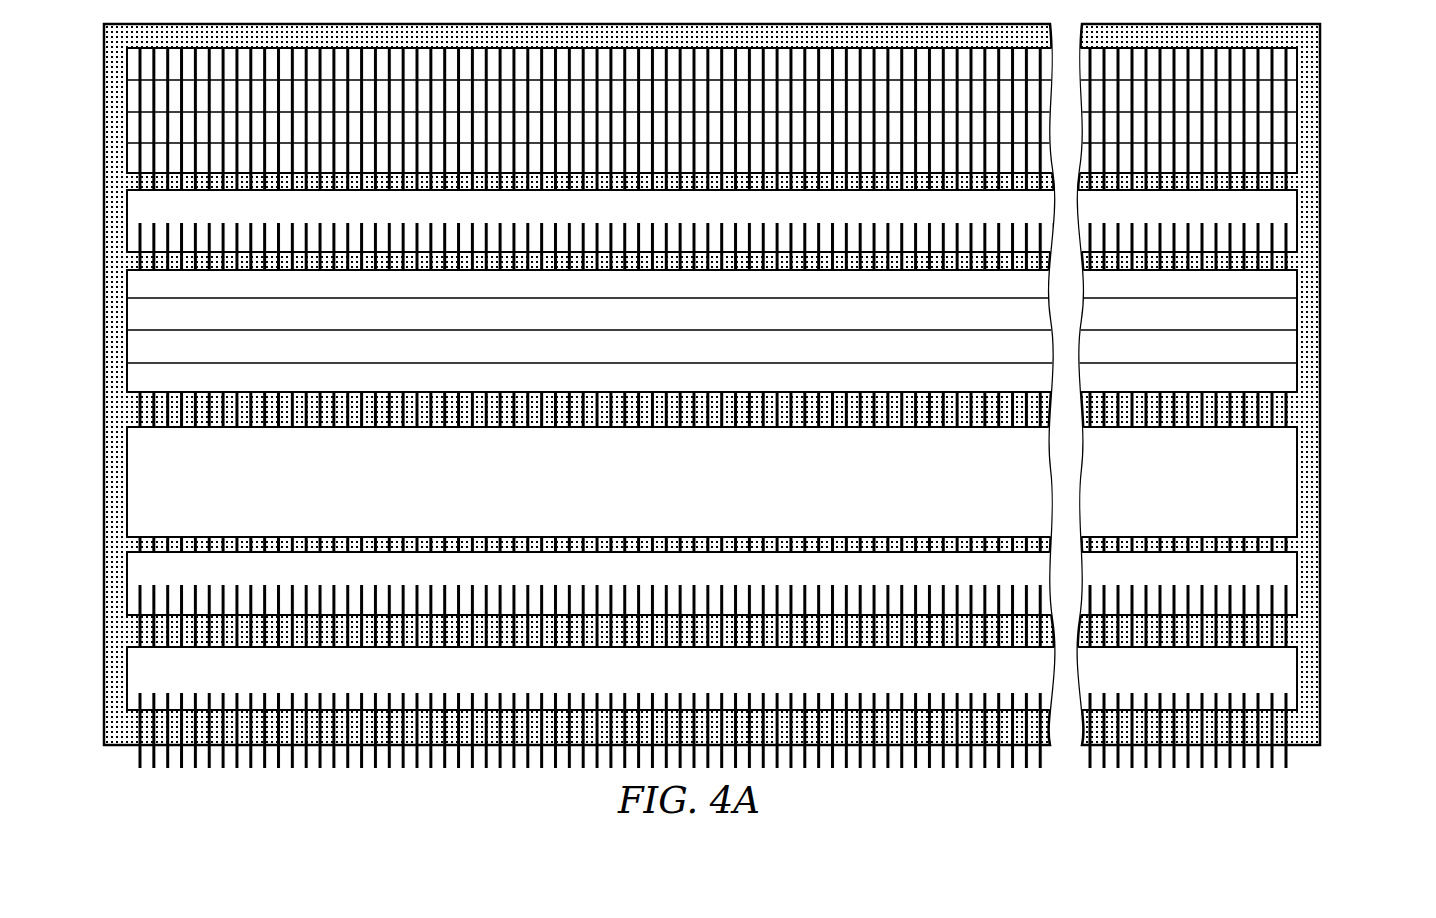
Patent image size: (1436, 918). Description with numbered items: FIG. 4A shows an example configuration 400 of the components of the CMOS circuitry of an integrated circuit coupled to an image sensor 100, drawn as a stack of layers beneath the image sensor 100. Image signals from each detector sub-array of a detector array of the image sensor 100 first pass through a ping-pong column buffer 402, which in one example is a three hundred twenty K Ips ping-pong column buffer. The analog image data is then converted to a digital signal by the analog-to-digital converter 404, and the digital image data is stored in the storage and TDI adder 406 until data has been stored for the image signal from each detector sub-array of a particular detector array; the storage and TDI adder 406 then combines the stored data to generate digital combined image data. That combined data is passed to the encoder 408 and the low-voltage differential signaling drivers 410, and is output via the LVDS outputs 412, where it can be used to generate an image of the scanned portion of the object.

The image sensor 100 is at (95, 52).
The configuration 400 is at (1333, 191).
The ping-pong column buffer 402 is at (127, 220).
The analog-to-digital (A/D) converter 404 is at (127, 345).
The storage and TDI adder 406 is at (127, 483).
The encoder 408 is at (127, 583).
The low-voltage differential signaling (LVDS) drivers 410 is at (127, 680).
The LVDS outputs 412 is at (140, 757).